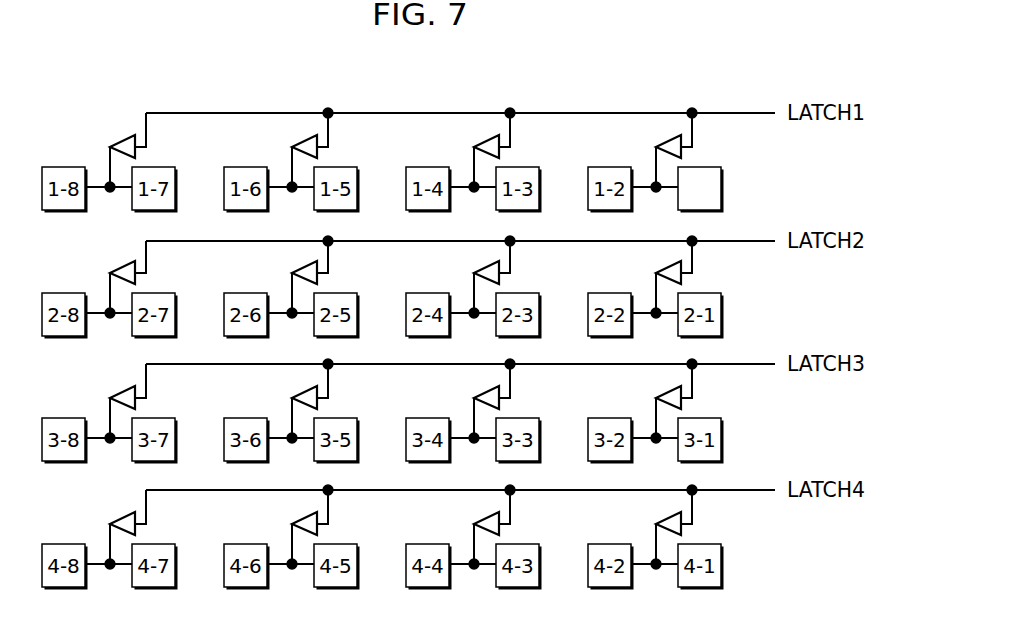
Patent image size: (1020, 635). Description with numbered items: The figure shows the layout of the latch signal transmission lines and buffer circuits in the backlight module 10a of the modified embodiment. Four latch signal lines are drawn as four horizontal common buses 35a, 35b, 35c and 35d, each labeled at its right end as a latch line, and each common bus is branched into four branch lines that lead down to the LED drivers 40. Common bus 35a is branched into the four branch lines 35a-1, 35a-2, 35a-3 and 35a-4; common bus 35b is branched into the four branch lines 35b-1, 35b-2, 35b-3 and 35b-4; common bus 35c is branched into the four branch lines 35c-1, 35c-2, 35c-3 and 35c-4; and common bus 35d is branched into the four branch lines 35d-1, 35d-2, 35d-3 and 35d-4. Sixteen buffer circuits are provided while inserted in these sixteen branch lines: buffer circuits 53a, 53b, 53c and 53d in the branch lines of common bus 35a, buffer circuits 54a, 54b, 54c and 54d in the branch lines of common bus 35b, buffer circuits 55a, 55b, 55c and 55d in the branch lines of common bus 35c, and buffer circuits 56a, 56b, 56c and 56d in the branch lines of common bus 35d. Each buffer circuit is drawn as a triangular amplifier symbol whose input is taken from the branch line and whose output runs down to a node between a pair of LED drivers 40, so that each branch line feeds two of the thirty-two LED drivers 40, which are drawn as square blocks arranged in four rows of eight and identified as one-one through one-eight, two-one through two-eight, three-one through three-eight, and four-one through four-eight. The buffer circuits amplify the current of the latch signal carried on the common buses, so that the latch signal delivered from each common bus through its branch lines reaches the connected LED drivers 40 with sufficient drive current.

The backlight module 10a is at (112, 80).
The common bus 35a is at (712, 113).
The common bus 35b is at (712, 241).
The common bus 35c is at (712, 364).
The common bus 35d is at (712, 490).
The branch line 35a-1 is at (692, 123).
The branch line 35a-2 is at (510, 123).
The branch line 35a-3 is at (328, 123).
The branch line 35a-4 is at (146, 123).
The branch line 35b-1 is at (692, 251).
The branch line 35b-2 is at (510, 251).
The branch line 35b-3 is at (328, 251).
The branch line 35b-4 is at (146, 251).
The branch line 35c-1 is at (692, 374).
The branch line 35c-2 is at (510, 374).
The branch line 35c-3 is at (328, 374).
The branch line 35c-4 is at (146, 374).
The branch line 35d-1 is at (692, 500).
The branch line 35d-2 is at (510, 500).
The branch line 35d-3 is at (328, 500).
The branch line 35d-4 is at (146, 500).
The buffer circuit 53a is at (682, 149).
The buffer circuit 53b is at (500, 149).
The buffer circuit 53c is at (318, 149).
The buffer circuit 53d is at (136, 149).
The buffer circuit 54a is at (682, 275).
The buffer circuit 54b is at (500, 275).
The buffer circuit 54c is at (318, 275).
The buffer circuit 54d is at (136, 275).
The buffer circuit 55a is at (682, 400).
The buffer circuit 55b is at (500, 400).
The buffer circuit 55c is at (318, 400).
The buffer circuit 55d is at (136, 400).
The buffer circuit 56a is at (682, 526).
The buffer circuit 56b is at (500, 526).
The buffer circuit 56c is at (318, 526).
The buffer circuit 56d is at (136, 526).
The LED driver 40 is at (724, 183).